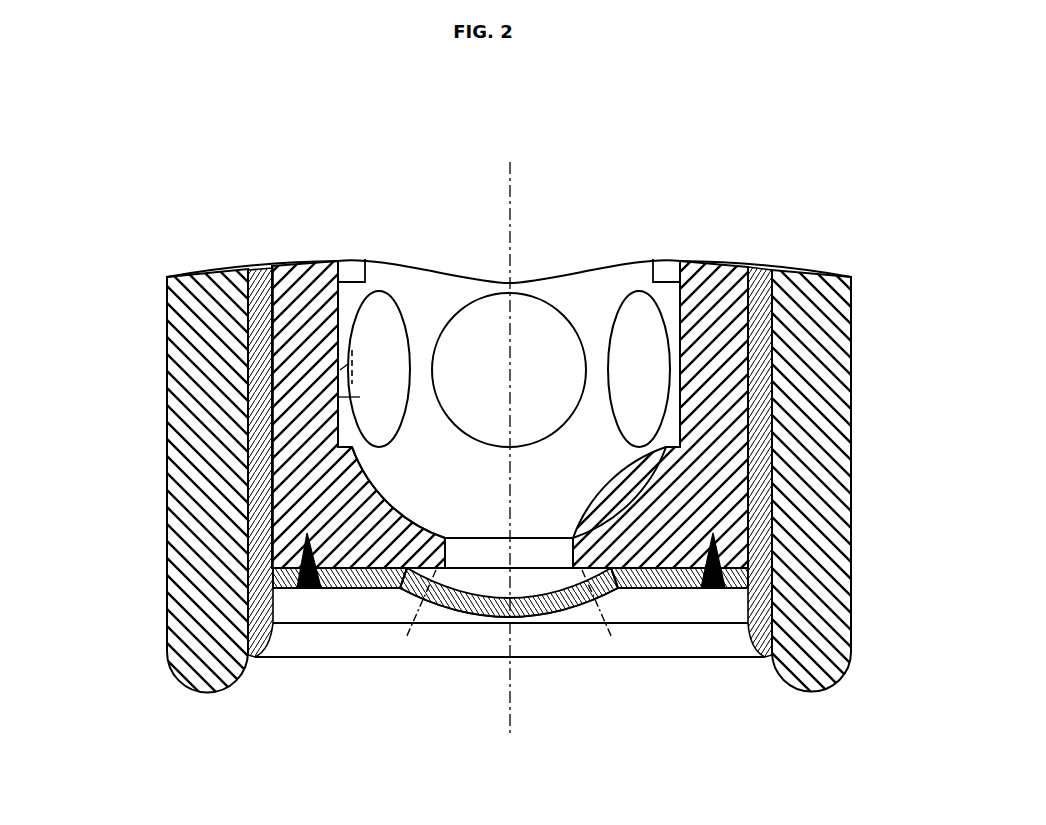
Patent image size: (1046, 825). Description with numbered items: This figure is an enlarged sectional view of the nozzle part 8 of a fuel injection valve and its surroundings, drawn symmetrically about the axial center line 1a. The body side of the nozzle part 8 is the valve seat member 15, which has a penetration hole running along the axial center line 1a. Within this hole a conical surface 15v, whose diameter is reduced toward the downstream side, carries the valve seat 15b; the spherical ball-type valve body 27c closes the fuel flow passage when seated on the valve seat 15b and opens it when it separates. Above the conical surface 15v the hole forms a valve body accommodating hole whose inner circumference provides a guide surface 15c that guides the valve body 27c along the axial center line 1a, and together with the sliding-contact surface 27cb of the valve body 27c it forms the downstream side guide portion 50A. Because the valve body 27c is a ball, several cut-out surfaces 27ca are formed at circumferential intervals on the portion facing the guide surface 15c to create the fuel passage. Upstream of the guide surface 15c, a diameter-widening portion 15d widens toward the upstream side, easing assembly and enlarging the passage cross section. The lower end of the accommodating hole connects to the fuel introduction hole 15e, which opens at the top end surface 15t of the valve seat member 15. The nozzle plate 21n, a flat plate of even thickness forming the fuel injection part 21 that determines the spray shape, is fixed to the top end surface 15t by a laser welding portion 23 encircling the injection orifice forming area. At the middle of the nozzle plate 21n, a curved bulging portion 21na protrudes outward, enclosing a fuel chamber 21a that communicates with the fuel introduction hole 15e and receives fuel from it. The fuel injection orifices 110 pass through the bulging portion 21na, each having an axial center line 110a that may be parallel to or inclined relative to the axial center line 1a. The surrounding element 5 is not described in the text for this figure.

The axial center line 1a is at (511, 178).
The cylinder liner 5 is at (755, 485).
The nozzle part 8 is at (157, 622).
The valve seat member 15 is at (500, 479).
The valve seat 15b is at (388, 483).
The guide surface 15c is at (677, 360).
The diameter-widening portion 15d is at (675, 258).
The fuel introduction hole 15e is at (452, 547).
The top end surface 15t is at (735, 657).
The conical surface 15v is at (650, 452).
The fuel injection part 21 is at (510, 684).
The fuel chamber 21a is at (528, 585).
The nozzle plate 21n is at (662, 588).
The bulging portion 21na is at (558, 610).
The laser welding portion 23 is at (303, 590).
The valve body 27c is at (366, 263).
The cut-out surfaces 27ca is at (345, 366).
The sliding-contact surface 27cb is at (337, 397).
The downstream side guide portion 50A is at (350, 357).
The fuel injection orifices 110 is at (427, 597).
The axial center line of fuel injection orifice 110a is at (420, 615).